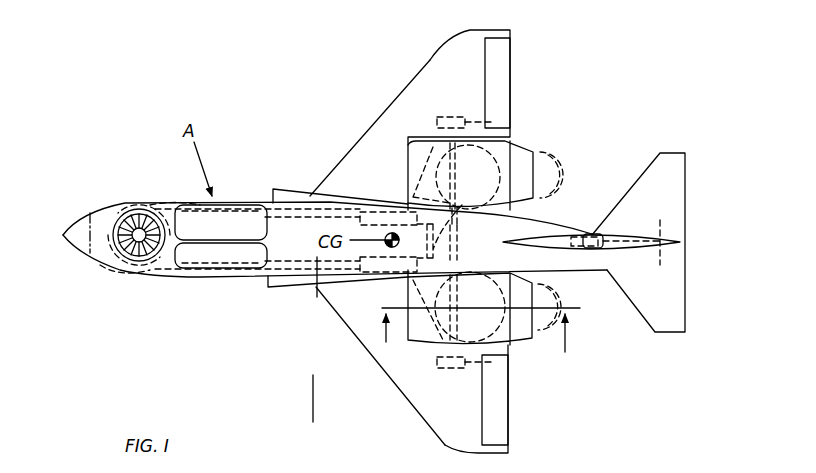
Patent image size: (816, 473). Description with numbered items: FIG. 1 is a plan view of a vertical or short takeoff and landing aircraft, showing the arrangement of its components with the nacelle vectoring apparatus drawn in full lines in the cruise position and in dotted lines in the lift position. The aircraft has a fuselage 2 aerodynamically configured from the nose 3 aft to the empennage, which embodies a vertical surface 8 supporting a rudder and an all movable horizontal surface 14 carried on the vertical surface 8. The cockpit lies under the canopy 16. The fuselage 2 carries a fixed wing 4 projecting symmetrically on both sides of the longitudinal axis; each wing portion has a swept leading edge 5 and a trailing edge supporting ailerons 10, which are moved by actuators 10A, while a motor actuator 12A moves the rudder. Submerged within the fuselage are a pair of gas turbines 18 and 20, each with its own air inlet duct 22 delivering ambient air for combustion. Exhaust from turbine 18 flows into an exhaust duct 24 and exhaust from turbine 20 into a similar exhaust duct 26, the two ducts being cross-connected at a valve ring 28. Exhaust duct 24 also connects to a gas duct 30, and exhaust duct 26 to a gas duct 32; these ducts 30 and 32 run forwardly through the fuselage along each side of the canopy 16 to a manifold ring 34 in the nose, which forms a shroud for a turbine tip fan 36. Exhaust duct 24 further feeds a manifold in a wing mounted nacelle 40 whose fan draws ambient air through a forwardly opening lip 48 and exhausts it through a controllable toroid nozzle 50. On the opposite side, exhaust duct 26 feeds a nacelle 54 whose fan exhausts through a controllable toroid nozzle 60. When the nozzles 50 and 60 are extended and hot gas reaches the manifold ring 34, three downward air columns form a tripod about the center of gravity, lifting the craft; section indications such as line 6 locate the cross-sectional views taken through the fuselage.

The fuselage 2 is at (275, 232).
The nose 3 is at (78, 232).
The fixed wing 4 is at (437, 67).
The swept leading edge 5 is at (393, 97).
The section line 6- 6 is at (315, 262).
The vertical surface 8 is at (553, 233).
The ailerons 10 is at (503, 63).
The actuators 10A is at (462, 113).
The motor actuator 12A is at (611, 230).
The all movable horizontal surface 14 is at (682, 192).
The canopy 16 is at (229, 262).
The gas turbine 18 is at (376, 282).
The gas turbine 20 is at (372, 210).
The air inlet duct 22 is at (285, 188).
The exhaust duct 24 is at (470, 308).
The exhaust duct 26 is at (470, 175).
The valve ring 28 is at (434, 242).
The gas duct 30 is at (165, 268).
The gas duct 32 is at (157, 200).
The manifold ring 34 is at (118, 266).
The turbine tip fan 36 is at (126, 224).
The wing mounted nacelle 40 is at (471, 281).
The forwardly opening lip 48 is at (407, 152).
The controllable toroid nozzle 50 is at (520, 340).
The nacelle 54 is at (459, 184).
The controllable toroid nozzle 60 is at (520, 172).